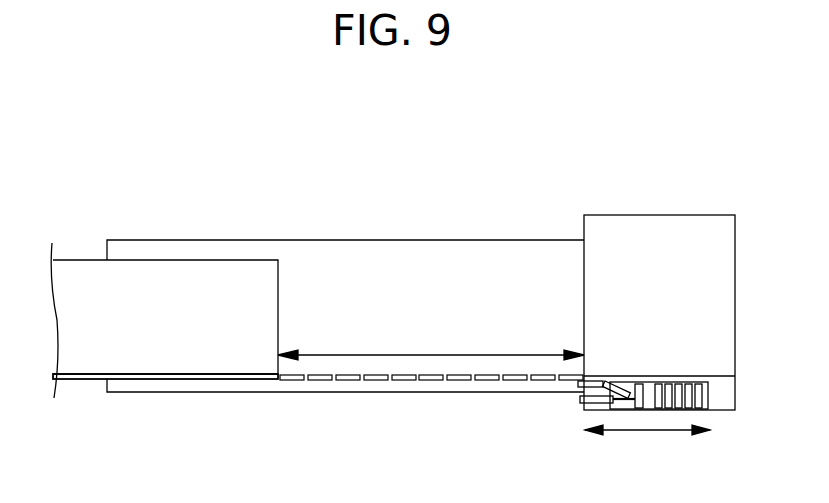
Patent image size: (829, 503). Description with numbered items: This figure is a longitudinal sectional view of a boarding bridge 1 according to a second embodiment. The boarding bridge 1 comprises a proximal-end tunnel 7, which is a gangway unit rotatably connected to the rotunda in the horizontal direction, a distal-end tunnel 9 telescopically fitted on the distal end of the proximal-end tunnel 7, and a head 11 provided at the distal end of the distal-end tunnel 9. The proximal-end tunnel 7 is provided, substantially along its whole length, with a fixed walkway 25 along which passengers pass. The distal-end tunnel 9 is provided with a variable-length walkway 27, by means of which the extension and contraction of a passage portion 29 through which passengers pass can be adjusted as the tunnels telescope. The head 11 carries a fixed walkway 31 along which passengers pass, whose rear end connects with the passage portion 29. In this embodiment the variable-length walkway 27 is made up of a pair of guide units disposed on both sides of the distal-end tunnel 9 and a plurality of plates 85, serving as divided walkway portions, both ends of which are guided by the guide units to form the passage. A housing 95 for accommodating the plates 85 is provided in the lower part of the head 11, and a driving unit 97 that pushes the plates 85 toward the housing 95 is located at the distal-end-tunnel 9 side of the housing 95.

The boarding bridge 1 is at (345, 175).
The proximal-end tunnel 7 is at (88, 259).
The distal-end tunnel 9 is at (427, 239).
The head 11 is at (656, 215).
The fixed walkway 25 is at (150, 374).
The variable-length walkway 27 is at (365, 348).
The passage portion 29 is at (433, 355).
The fixed walkway 31 is at (690, 375).
The plates 85 is at (355, 382).
The housing 95 is at (705, 396).
The driving unit 97 is at (593, 403).